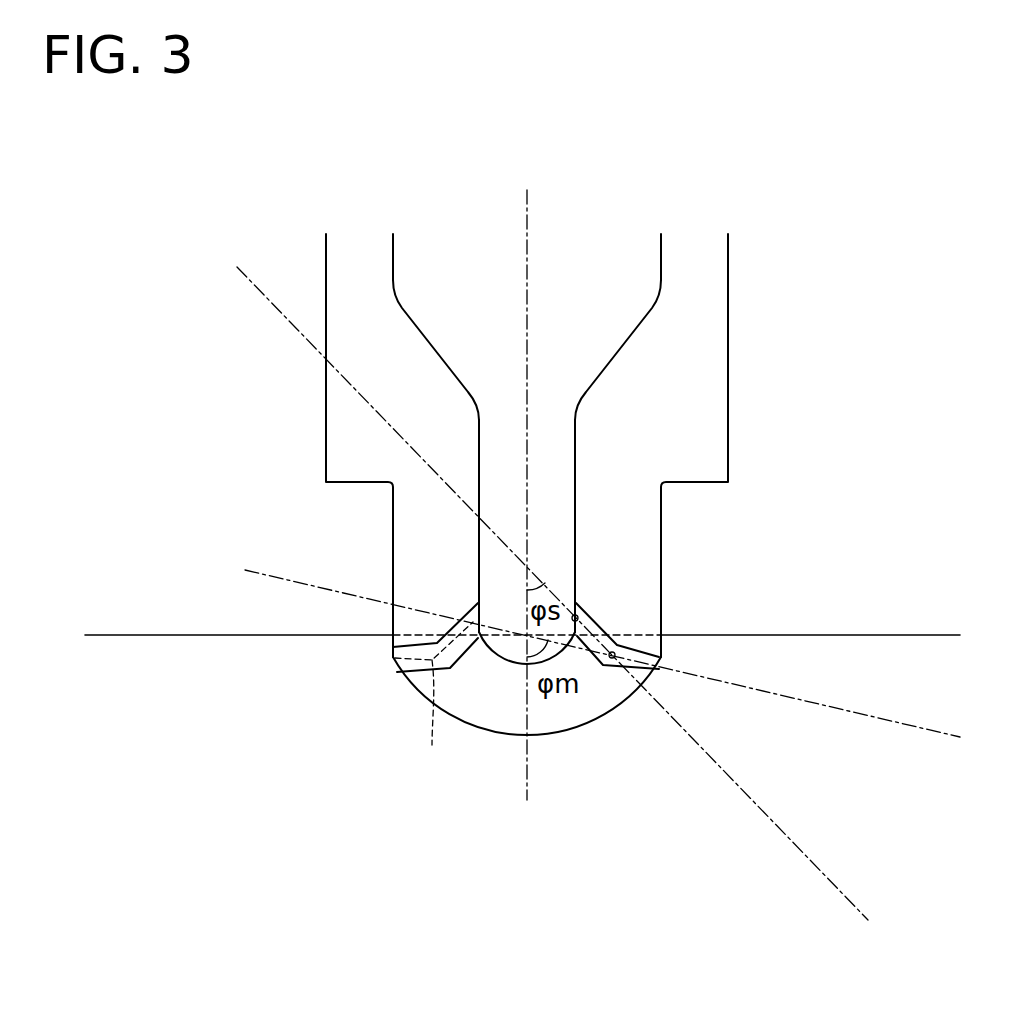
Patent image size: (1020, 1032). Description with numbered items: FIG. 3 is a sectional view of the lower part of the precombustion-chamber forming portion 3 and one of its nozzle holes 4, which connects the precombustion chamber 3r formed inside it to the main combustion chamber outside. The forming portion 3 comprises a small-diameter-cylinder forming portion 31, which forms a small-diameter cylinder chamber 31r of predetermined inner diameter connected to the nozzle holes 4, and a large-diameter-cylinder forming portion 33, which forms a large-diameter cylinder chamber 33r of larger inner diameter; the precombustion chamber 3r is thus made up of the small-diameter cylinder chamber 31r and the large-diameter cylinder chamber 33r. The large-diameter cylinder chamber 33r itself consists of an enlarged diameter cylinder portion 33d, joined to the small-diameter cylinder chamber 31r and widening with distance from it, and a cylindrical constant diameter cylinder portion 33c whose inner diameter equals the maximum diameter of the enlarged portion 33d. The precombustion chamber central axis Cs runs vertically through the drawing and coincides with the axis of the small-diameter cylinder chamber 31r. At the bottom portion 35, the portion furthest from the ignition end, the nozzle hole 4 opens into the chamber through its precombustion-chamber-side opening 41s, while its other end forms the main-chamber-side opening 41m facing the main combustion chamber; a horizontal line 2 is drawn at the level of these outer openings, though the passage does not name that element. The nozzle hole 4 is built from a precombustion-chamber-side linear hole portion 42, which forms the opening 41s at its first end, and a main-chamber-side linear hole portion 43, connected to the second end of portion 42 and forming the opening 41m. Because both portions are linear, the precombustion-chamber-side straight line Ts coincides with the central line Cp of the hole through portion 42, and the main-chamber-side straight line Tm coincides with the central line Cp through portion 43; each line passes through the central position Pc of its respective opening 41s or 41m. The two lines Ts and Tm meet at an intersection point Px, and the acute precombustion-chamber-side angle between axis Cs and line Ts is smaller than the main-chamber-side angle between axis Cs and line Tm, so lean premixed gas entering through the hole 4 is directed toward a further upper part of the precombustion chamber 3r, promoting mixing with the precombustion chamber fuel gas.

The precombustion-chamber forming portion 3 is at (876, 262).
The precombustion chamber 3r is at (160, 365).
The large-diameter-cylinder forming portion 33 is at (825, 232).
The large-diameter cylinder chamber 33r is at (228, 348).
The constant diameter cylinder portion 33c is at (423, 262).
The enlarged diameter cylinder portion 33d is at (443, 328).
The small-diameter-cylinder forming portion 31 is at (577, 450).
The small-diameter cylinder chamber 31r is at (492, 451).
The bottom portion 35 is at (521, 665).
The precombustion-chamber-side opening 41s is at (487, 665).
The nozzle hole 4 is at (256, 650).
The precombustion-chamber-side linear hole portion 42 is at (395, 640).
The main-chamber-side linear hole portion 43 is at (398, 675).
The main-chamber-side opening 41m is at (396, 660).
The cylinder head / mounting surface 2 is at (162, 633).
The precombustion chamber central axis Cs is at (527, 213).
The precombustion-chamber-side straight line Ts is at (258, 288).
The main-chamber-side straight line Tm is at (282, 578).
The central line Cp is at (434, 714).
The central position Pc is at (575, 615).
The intersection point Px is at (607, 667).